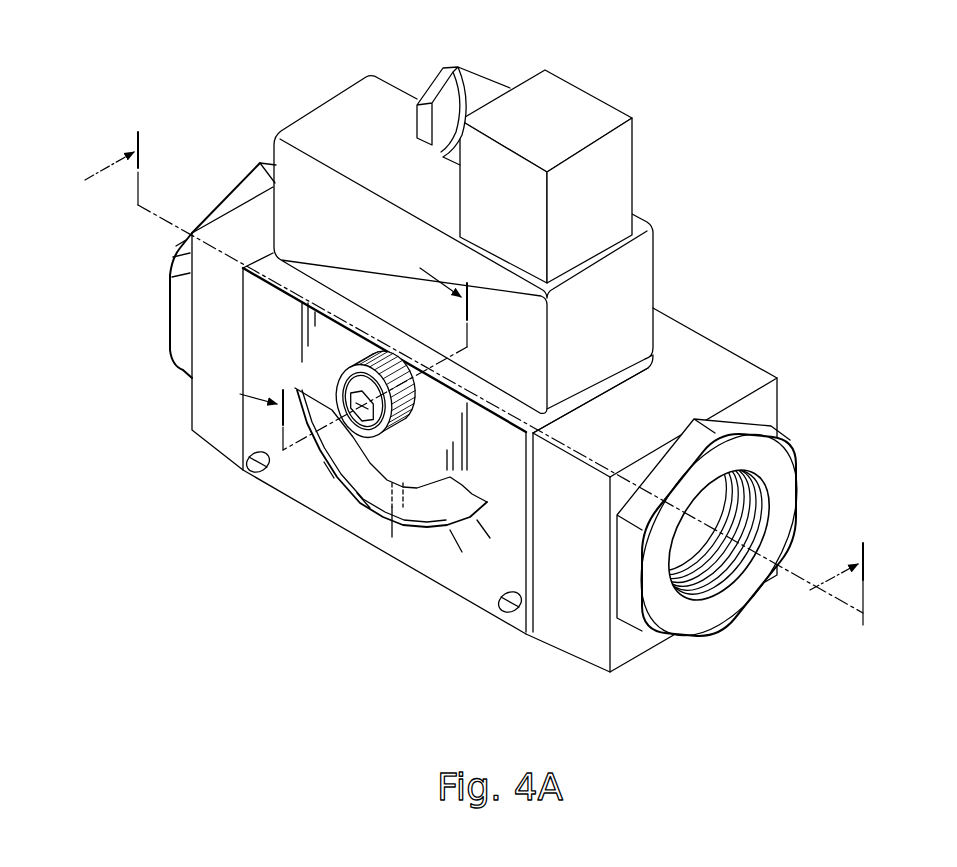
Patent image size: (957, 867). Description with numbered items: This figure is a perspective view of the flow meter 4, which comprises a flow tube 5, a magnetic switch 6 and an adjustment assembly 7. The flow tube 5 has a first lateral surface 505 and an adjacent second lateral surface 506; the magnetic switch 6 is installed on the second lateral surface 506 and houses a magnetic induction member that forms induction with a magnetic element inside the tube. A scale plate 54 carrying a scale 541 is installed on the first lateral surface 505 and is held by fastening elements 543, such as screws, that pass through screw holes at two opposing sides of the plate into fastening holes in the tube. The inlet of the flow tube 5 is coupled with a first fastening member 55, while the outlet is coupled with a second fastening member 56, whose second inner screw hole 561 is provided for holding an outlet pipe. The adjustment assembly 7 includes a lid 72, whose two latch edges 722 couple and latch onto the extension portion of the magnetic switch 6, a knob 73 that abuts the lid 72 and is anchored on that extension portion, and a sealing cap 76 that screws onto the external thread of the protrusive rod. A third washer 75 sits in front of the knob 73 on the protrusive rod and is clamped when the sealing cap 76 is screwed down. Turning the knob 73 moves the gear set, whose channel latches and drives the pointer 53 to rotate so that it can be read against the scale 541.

The flow meter 4 is at (494, 371).
The flow tube 5 is at (505, 479).
The magnetic switch 6 is at (663, 215).
The adjustment assembly 7 is at (333, 402).
The pointer 53 is at (392, 520).
The scale plate 54 is at (290, 473).
The first fastening member 55 is at (178, 302).
The second fastening member 56 is at (754, 554).
The lid 72 is at (388, 287).
The knob 73 is at (403, 507).
The third washer 75 is at (372, 423).
The sealing cap 76 is at (352, 417).
The first lateral surface 505 is at (585, 613).
The second lateral surface 506 is at (673, 355).
The scale 541 is at (427, 536).
The fastening elements 543 is at (245, 458).
The second inner screw hole 561 is at (712, 567).
The latch edges 722 is at (243, 265).